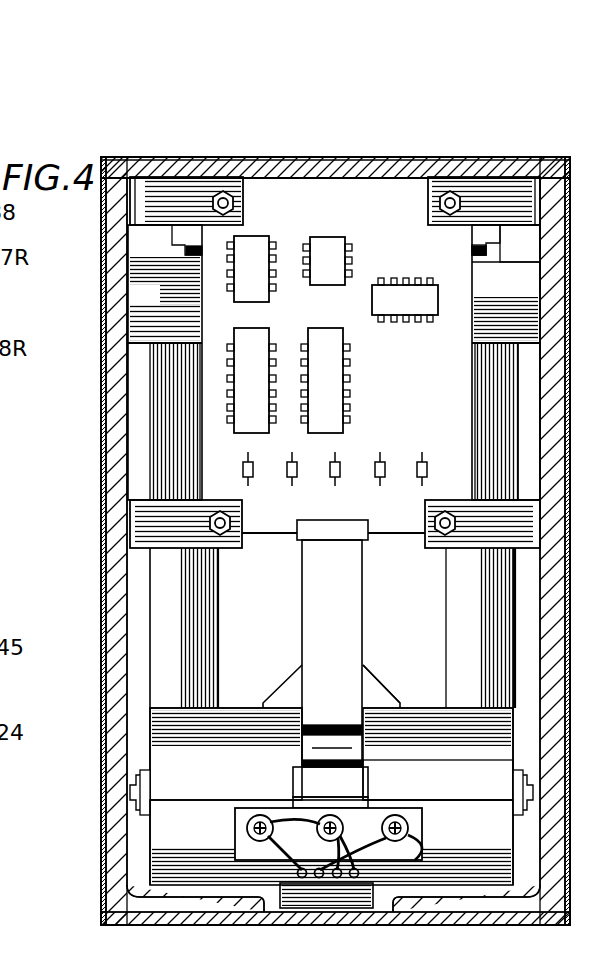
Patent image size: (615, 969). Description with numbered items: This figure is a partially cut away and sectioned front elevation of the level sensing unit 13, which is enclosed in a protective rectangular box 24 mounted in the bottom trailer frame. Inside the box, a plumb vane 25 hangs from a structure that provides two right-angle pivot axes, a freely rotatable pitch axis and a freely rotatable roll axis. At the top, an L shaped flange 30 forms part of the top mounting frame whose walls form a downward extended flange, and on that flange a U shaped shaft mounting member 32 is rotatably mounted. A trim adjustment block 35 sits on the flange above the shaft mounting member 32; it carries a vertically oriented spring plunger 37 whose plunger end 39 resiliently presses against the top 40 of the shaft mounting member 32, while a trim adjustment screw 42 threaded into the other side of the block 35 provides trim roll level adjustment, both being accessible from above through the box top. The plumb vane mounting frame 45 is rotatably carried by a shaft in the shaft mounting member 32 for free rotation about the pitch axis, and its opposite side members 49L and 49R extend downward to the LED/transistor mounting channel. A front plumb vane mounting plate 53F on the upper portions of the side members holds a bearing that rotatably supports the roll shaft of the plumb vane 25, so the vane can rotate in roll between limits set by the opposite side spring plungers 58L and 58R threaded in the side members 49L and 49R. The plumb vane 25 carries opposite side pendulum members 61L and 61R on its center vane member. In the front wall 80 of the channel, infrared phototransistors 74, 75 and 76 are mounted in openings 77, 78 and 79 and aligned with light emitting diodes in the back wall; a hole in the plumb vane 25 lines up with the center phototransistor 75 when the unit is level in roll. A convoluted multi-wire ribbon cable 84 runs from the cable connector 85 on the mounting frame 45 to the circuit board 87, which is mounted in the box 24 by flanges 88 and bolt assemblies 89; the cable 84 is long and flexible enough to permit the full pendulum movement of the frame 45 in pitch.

The level sensing unit 13 is at (99, 423).
The protective rectangular box 24 is at (297, 170).
The plumb vane 25 is at (395, 698).
The L shaped flange 30 is at (392, 170).
The U shaped shaft mounting member 32 is at (188, 339).
The trim adjustment block 35 is at (500, 235).
The spring plunger 37 is at (490, 252).
The plunger end 39 is at (482, 255).
The top of shaft mounting member 40 is at (152, 258).
The trim adjustment screw 42 is at (182, 250).
The plumb vane mounting frame 45 is at (150, 660).
The right side member 49R is at (205, 612).
The left side member 49L is at (448, 602).
The front plumb vane mounting plate 53F is at (180, 350).
The right side spring plunger 58R is at (148, 783).
The left side spring plunger 58L is at (525, 775).
The right pendulum member 61R is at (285, 680).
The left pendulum member 61L is at (383, 680).
The infrared phototransistor 74 is at (410, 830).
The center infrared phototransistor 75 is at (360, 870).
The infrared phototransistor 76 is at (246, 829).
The opening in front wall 77 is at (415, 845).
The opening in front wall 78 is at (370, 782).
The opening in front wall 79 is at (250, 845).
The front wall of channel 80 is at (150, 870).
The convoluted multi-wire ribbon cable 84 is at (302, 740).
The cable connector 85 is at (296, 790).
The circuit board 87 is at (428, 396).
The flange 88 is at (150, 208).
The bolt assembly 89 is at (214, 206).